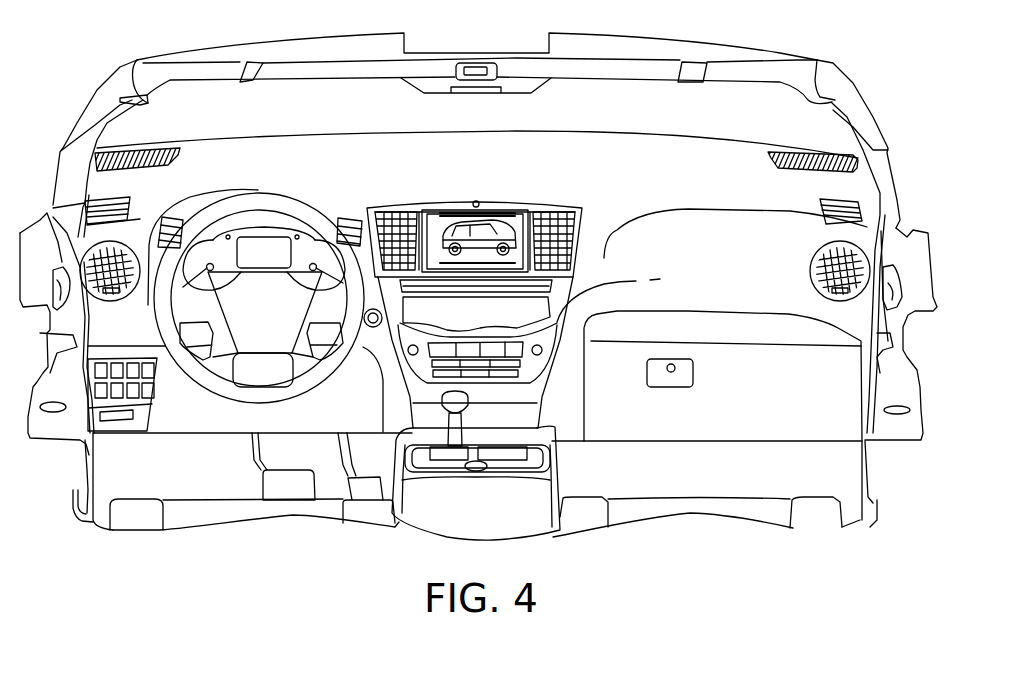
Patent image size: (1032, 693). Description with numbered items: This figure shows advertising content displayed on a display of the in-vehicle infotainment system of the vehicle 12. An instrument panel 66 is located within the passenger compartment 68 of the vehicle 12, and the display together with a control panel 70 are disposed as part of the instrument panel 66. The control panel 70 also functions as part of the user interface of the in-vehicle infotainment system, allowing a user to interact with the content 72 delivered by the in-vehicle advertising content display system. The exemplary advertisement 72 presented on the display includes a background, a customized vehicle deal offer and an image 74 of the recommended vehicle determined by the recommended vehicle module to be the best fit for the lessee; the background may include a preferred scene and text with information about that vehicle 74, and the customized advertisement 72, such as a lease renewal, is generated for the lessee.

The vehicle 12 is at (727, 36).
The instrument panel 66 is at (320, 200).
The advertisement 72 is at (474, 220).
The image of the recommended vehicle 74 is at (437, 214).
The control panel 70 is at (514, 311).
The passenger compartment 68 is at (133, 460).